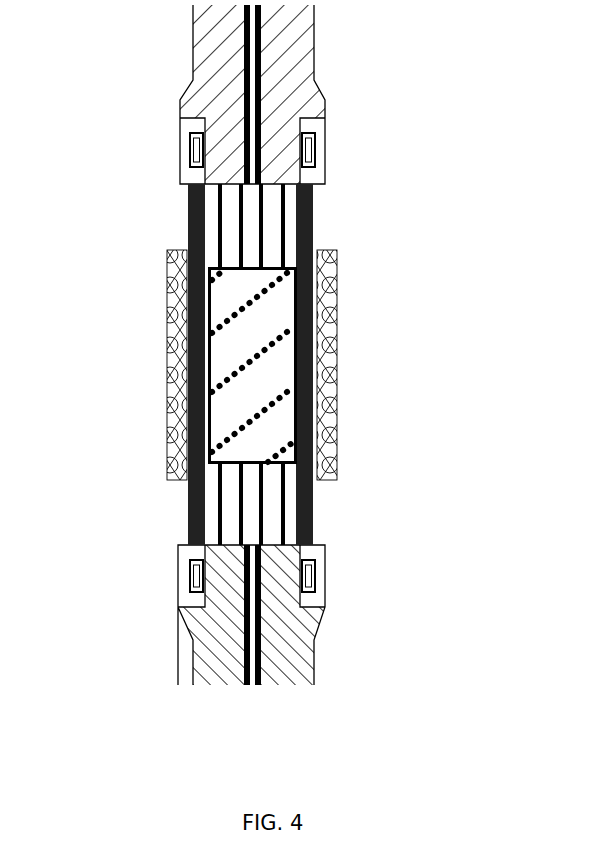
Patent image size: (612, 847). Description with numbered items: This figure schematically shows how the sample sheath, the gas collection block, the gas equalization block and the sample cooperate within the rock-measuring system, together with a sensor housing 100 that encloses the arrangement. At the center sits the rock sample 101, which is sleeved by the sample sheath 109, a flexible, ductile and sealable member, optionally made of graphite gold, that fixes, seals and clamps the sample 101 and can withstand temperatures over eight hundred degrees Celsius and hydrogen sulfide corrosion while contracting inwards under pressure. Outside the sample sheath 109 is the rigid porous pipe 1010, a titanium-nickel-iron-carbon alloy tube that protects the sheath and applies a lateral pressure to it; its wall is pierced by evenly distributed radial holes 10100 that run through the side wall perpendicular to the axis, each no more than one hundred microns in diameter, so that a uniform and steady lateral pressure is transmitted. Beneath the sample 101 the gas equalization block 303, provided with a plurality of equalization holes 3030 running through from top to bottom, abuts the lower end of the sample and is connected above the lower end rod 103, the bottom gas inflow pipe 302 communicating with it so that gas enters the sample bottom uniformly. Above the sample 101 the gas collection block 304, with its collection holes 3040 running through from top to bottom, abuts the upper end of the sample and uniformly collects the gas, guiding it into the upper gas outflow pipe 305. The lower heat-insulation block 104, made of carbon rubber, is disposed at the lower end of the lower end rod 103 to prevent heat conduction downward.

The lower heat-insulation block 104 is at (278, 52).
The upper gas outflow pipe 305 is at (252, 103).
The gas collection block 304 is at (228, 215).
The collection holes 3040 is at (280, 225).
The sample sheath 109 is at (193, 227).
The sensor housing 100 is at (236, 297).
The porous pipe 1010 is at (173, 336).
The sample 101 is at (250, 365).
The radial holes 10100 is at (177, 390).
The gas equalization block 303 is at (253, 506).
The equalization holes 3030 is at (222, 493).
The bottom gas inflow pipe 302 is at (250, 632).
The lower end rod 103 is at (288, 666).